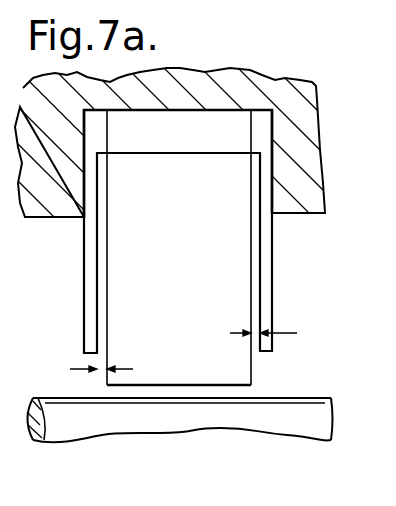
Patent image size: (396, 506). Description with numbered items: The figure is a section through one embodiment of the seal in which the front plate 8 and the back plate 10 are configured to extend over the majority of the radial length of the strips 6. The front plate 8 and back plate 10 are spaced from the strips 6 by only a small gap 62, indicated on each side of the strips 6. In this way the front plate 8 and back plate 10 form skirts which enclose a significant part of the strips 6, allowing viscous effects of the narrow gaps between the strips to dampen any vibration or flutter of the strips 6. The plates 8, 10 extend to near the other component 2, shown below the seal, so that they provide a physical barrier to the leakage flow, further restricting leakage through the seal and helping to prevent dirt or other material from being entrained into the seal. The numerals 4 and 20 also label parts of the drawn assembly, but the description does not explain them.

The other component 2 is at (158, 417).
The housing wall 4 is at (190, 92).
The strips 6 is at (215, 292).
The front plate 8 is at (84, 274).
The back plate 10 is at (320, 226).
The bottom wall 20 is at (230, 373).
The gap 62 is at (263, 330).